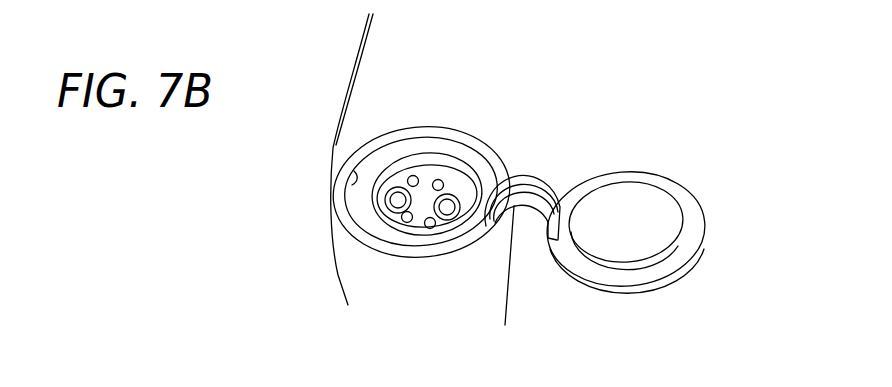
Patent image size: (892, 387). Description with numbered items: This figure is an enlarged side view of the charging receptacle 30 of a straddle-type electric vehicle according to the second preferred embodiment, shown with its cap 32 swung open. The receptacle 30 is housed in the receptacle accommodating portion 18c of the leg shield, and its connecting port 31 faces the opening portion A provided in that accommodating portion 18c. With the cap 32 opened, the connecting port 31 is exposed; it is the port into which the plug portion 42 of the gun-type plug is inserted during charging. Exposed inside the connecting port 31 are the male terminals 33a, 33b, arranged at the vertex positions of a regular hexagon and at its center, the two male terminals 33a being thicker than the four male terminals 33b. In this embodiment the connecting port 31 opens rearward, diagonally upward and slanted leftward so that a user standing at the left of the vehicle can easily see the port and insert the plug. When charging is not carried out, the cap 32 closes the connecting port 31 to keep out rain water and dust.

The receptacle 30 is at (399, 206).
The connecting port 31 is at (414, 163).
The male terminal 33a is at (456, 202).
The male terminal 33b is at (446, 182).
The cap 32 is at (680, 263).
The receptacle accommodating portion 18c is at (495, 285).
The plug portion 42 is at (406, 381).
The opening portion A is at (354, 171).